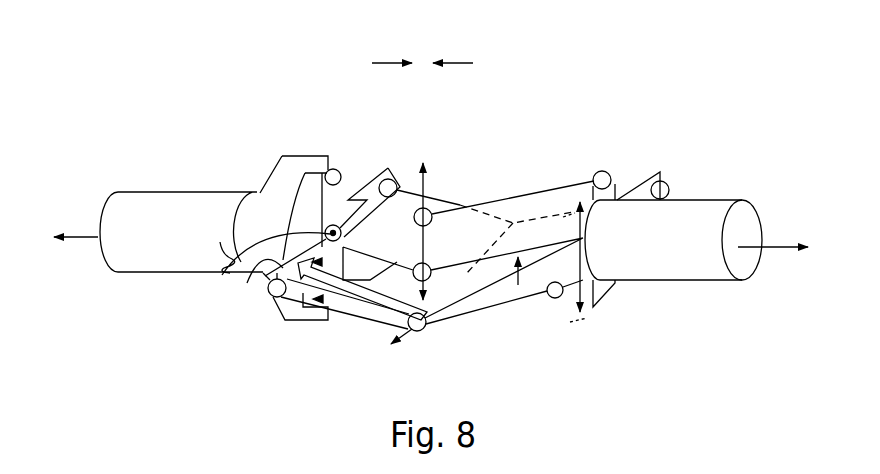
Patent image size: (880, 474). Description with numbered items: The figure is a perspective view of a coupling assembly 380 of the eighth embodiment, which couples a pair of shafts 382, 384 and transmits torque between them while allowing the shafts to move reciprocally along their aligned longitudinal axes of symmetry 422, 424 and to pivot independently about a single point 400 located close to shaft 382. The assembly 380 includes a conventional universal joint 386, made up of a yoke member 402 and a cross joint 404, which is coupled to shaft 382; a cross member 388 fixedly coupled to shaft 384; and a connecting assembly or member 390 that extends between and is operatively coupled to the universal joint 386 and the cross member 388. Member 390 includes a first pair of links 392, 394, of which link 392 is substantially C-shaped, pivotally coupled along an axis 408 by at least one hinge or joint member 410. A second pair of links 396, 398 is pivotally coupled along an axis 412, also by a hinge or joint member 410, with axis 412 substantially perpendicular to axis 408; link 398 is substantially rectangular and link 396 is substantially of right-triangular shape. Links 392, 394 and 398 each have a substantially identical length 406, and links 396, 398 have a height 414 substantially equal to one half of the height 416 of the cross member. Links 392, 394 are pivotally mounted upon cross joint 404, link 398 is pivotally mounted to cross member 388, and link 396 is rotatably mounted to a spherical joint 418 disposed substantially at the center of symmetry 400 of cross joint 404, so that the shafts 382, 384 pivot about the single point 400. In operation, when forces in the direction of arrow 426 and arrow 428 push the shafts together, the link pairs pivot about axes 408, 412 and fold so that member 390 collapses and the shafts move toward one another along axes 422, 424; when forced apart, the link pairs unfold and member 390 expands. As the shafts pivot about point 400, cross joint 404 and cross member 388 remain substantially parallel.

The assembly 380 is at (202, 125).
The shaft 382 is at (138, 192).
The shaft 384 is at (720, 200).
The universal joint 386 is at (271, 171).
The cross member 388 is at (593, 193).
The connecting assembly 390 is at (486, 195).
The link 392 is at (366, 308).
The link 394 is at (502, 293).
The link 396 is at (418, 247).
The link 398 is at (483, 247).
The single point 400 is at (346, 225).
The yoke member 402 is at (263, 279).
The cross joint 404 is at (263, 277).
The length 406 is at (390, 302).
The axis 408 is at (404, 336).
The hinge or joint member 410 is at (428, 325).
The axis 412 is at (416, 177).
The height 414 is at (518, 191).
The height 416 is at (583, 293).
The spherical joint 418 is at (210, 274).
The longitudinal axis of symmetry 422 is at (77, 236).
The longitudinal axis of symmetry 424 is at (793, 245).
The arrow 426 is at (390, 62).
The arrow 428 is at (460, 62).